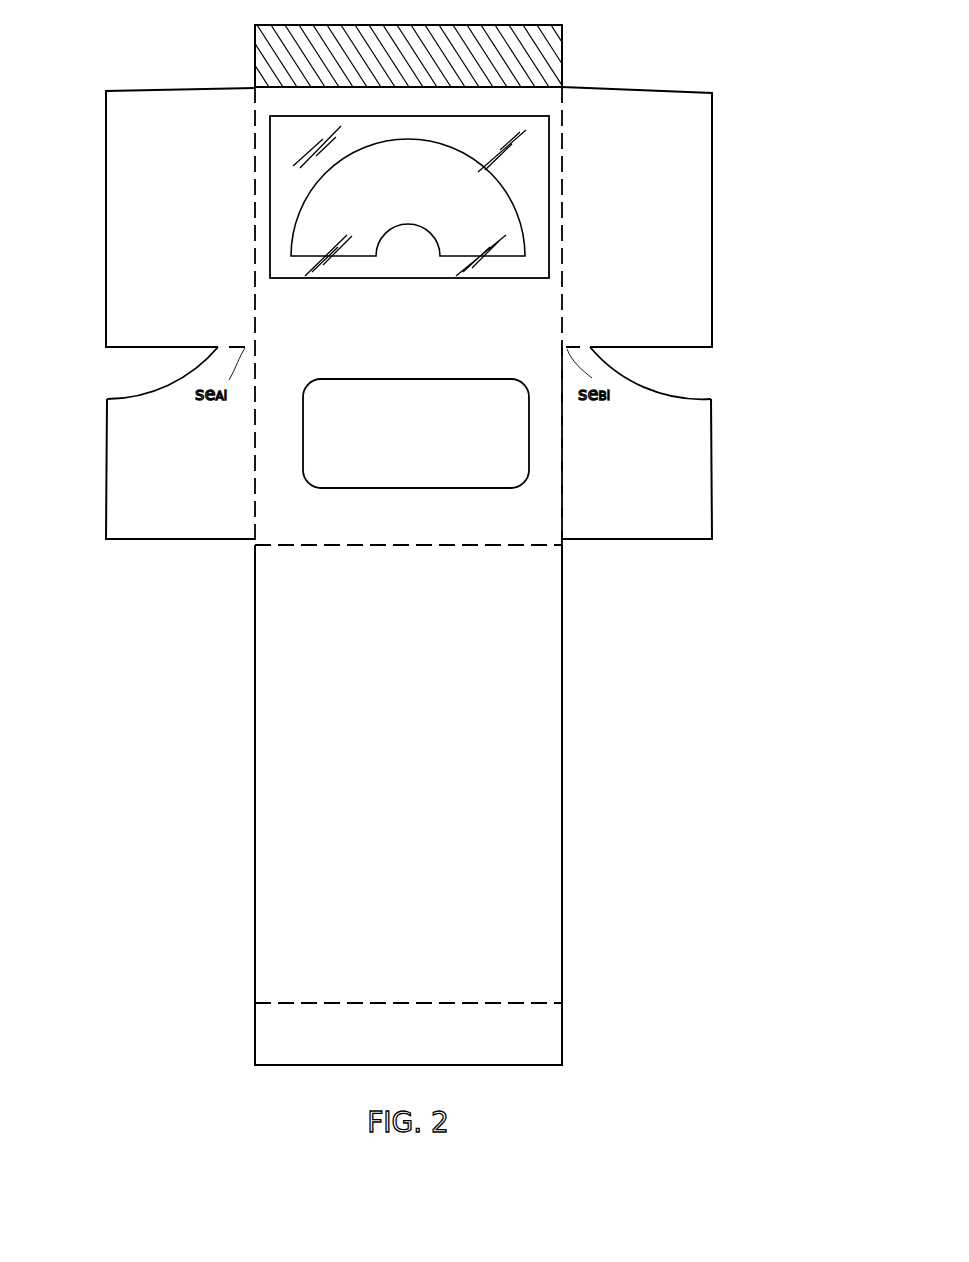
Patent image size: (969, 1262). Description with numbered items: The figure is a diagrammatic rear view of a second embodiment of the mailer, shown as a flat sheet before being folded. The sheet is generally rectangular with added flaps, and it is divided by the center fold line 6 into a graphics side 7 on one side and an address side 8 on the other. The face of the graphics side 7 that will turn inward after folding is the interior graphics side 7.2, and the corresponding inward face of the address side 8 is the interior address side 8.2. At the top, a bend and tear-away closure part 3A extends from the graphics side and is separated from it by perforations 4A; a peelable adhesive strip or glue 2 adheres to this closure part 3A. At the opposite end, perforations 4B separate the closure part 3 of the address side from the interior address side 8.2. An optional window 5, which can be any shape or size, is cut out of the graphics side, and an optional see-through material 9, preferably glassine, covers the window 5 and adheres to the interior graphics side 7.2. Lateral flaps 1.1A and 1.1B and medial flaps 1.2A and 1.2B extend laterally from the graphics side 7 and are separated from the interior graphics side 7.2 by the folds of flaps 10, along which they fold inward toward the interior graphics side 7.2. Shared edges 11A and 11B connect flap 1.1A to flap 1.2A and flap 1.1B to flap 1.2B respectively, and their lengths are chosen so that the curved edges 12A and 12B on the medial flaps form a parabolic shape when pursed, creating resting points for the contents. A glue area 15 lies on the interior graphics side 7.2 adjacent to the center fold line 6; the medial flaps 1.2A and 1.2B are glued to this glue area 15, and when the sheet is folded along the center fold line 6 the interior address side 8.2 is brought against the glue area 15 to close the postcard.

The adhesive strip or glue 2 is at (262, 43).
The bend and tear-away closure part 3A is at (566, 60).
The perforations 4A is at (268, 88).
The see-through material 9 is at (270, 131).
The window 5 is at (313, 188).
The lateral flap 1.1A is at (152, 234).
The lateral flap 1.1B is at (607, 234).
The graphics side 7 is at (734, 256).
The shared edge 11A is at (237, 347).
The shared edge 11B is at (567, 347).
The interior graphics side 7.2 is at (400, 344).
The curved edge 12A is at (143, 393).
The curved edge 12B is at (660, 388).
The medial flap 1.2A is at (152, 472).
The medial flap 1.2B is at (607, 472).
The glue area 15 is at (403, 447).
The center fold line 6 is at (287, 546).
The folds of flaps 10 is at (563, 478).
The address side 8 is at (586, 637).
The interior address side 8.2 is at (425, 776).
The bottom closure flap 3 is at (276, 1042).
The perforations 4B is at (502, 1003).